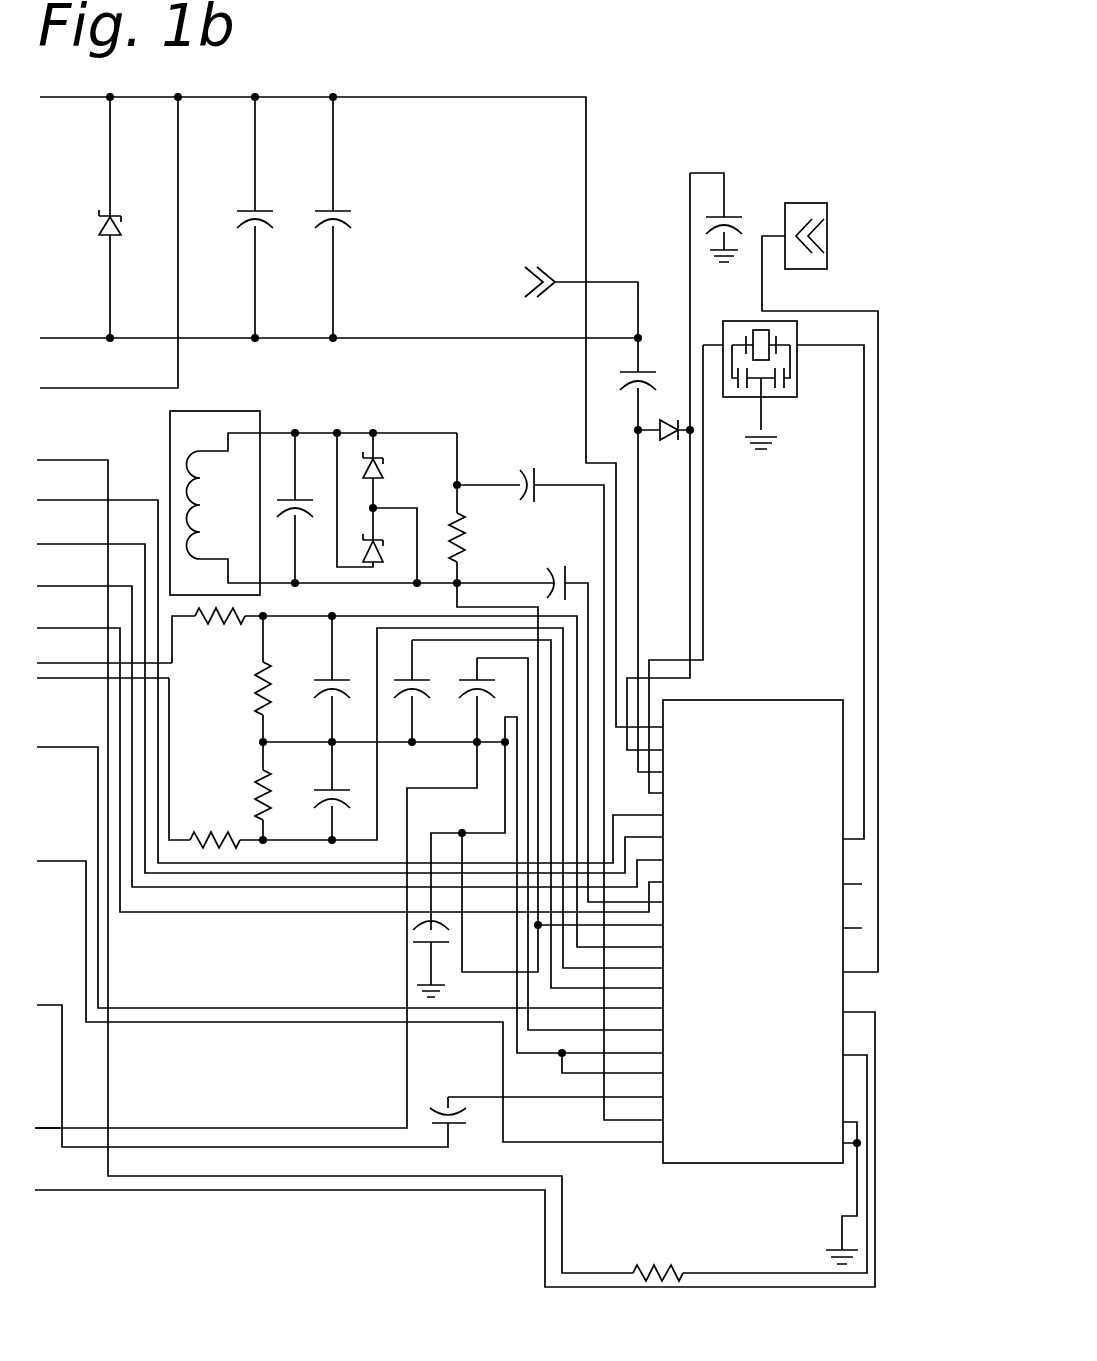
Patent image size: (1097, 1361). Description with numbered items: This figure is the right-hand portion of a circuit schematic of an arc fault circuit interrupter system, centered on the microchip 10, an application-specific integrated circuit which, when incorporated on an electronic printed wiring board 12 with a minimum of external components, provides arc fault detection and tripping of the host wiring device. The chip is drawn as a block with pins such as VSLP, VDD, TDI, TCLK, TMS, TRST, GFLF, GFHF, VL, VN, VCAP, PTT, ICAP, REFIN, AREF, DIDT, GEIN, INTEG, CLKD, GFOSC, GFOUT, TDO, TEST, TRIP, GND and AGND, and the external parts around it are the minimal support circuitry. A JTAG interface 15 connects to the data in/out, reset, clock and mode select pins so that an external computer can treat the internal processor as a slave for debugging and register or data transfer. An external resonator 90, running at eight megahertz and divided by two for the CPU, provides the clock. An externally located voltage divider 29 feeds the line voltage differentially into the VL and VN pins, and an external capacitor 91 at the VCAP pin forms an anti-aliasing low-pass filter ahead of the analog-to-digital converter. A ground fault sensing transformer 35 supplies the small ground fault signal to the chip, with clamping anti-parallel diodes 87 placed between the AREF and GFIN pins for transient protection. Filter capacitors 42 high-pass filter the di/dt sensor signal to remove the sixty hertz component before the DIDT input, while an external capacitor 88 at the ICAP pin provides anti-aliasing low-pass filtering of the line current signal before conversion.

The microchip 10 is at (798, 671).
The electronic printed wiring board 12 is at (129, 1273).
The JTAG interface 15 is at (812, 203).
The voltage divider 29 is at (257, 783).
The ground fault sensing transformer 35 is at (190, 478).
The filter capacitors 42 is at (433, 1113).
The clamping anti-parallel diodes 87 is at (378, 545).
The external capacitor 88 is at (468, 697).
The external resonator 90 is at (750, 321).
The external capacitor 91 is at (422, 678).